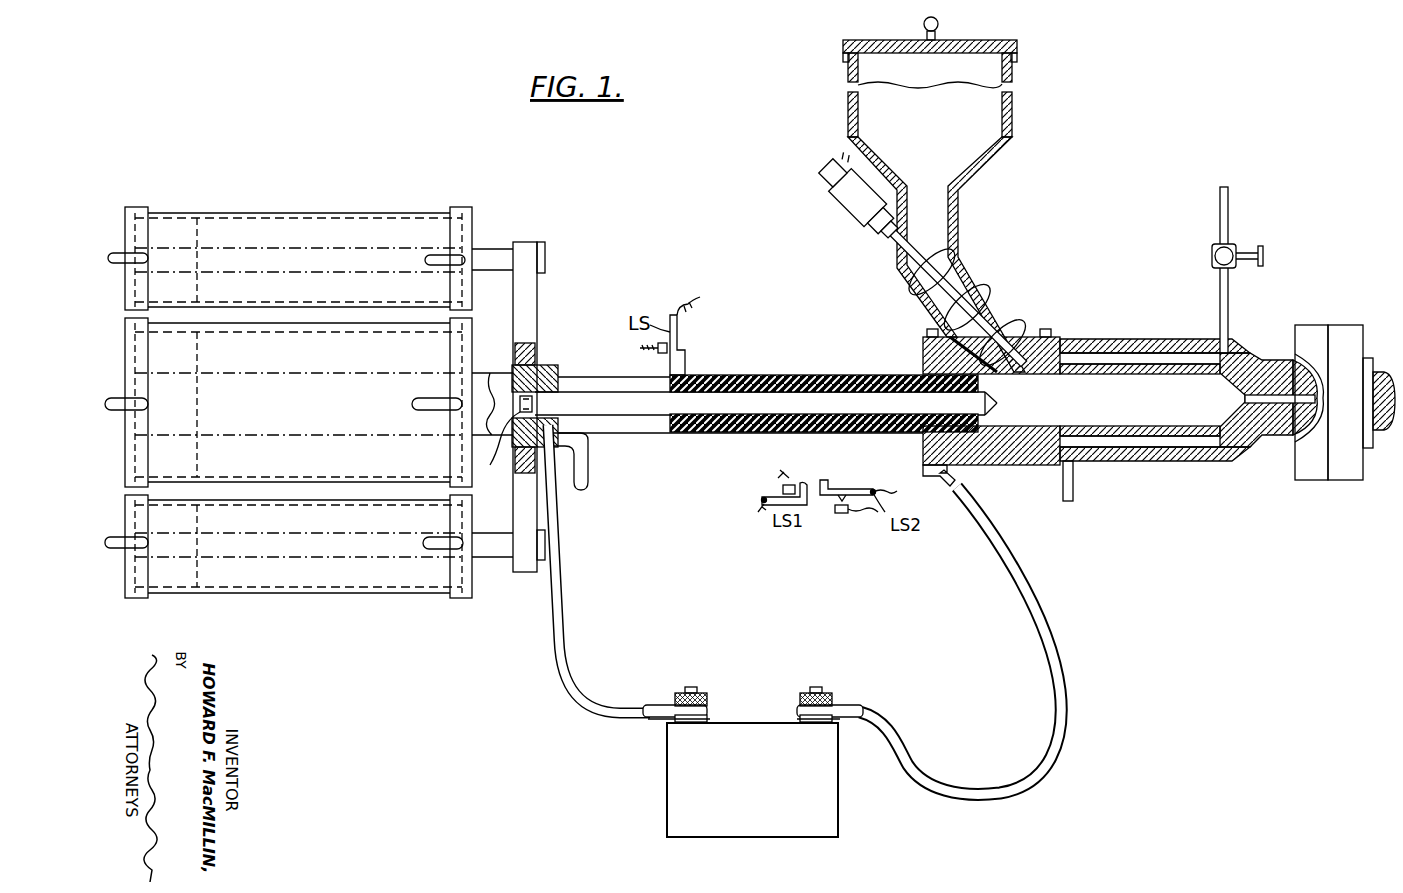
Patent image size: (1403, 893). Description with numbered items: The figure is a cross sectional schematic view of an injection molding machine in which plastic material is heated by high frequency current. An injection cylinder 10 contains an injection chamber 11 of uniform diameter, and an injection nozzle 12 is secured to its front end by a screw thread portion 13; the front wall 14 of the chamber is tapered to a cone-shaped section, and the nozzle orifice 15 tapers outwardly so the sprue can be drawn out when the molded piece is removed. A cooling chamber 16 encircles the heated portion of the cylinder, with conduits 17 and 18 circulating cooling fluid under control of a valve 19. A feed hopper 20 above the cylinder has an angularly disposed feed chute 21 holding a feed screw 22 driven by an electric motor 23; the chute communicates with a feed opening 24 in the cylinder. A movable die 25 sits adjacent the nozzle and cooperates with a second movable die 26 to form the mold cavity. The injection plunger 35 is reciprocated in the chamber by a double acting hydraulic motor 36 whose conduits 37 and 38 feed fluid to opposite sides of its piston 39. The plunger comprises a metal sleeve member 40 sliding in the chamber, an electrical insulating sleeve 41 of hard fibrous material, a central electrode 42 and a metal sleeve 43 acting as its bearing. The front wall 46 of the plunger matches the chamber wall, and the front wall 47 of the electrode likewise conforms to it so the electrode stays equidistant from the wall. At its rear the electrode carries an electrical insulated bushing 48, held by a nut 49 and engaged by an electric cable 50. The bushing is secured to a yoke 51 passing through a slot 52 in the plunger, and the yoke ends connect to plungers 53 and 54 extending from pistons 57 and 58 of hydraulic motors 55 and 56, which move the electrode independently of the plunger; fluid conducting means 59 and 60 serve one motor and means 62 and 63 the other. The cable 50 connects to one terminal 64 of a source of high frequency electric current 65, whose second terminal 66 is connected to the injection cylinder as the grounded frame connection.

The injection cylinder 10 is at (1100, 339).
The injection chamber 11 is at (1160, 370).
The injection nozzle 12 is at (1283, 360).
The screw thread portion 13 is at (1262, 356).
The front wall 14 is at (1215, 400).
The orifice 15 is at (1278, 435).
The cooling chamber 16 is at (1190, 354).
The fluid conducting conduit 17 is at (1230, 207).
The fluid conducting conduit 18 is at (1073, 490).
The valve 19 is at (1240, 250).
The feed hopper 20 is at (1012, 150).
The feed chute 21 is at (973, 285).
The feed screw 22 is at (1000, 318).
The electric motor 23 is at (842, 215).
The feed opening 24 is at (1045, 340).
The movable die 25 is at (1310, 481).
The second movable die 26 is at (1346, 481).
The injection plunger 35 is at (784, 369).
The hydraulic motor 36 is at (346, 412).
The fluid conducting conduit 37 is at (118, 400).
The fluid conducting conduit 38 is at (428, 398).
The piston 39 is at (198, 368).
The metal sleeve member 40 is at (872, 376).
The electrical insulating sleeve 41 is at (900, 376).
The central electrode 42 is at (592, 384).
The metal sleeve 43 is at (706, 433).
The front wall 46 is at (990, 413).
The front wall 47 is at (1000, 394).
The electrical insulated bushing 48 is at (545, 365).
The nut 49 is at (497, 441).
The electric cable 50 is at (558, 600).
The yoke 51 is at (537, 290).
The slot 52 is at (668, 430).
The plunger 53 is at (500, 540).
The plunger 54 is at (492, 252).
The hydraulic motor 55 is at (298, 546).
The hydraulic motor 56 is at (298, 258).
The piston 57 is at (200, 527).
The piston 58 is at (200, 246).
The fluid conducting means 59 is at (125, 541).
The fluid conducting means 60 is at (437, 542).
The fluid conducting means 62 is at (125, 256).
The fluid conducting means 63 is at (438, 256).
The terminal 64 is at (700, 706).
The source of high frequency electric current 65 is at (667, 783).
The second terminal 66 is at (800, 699).